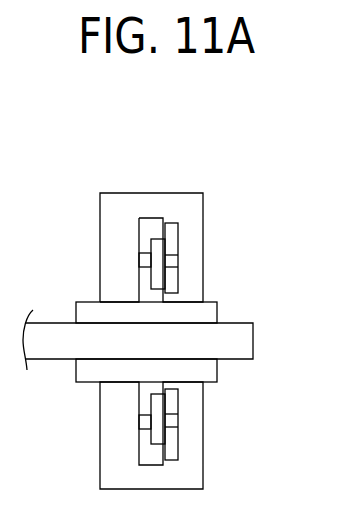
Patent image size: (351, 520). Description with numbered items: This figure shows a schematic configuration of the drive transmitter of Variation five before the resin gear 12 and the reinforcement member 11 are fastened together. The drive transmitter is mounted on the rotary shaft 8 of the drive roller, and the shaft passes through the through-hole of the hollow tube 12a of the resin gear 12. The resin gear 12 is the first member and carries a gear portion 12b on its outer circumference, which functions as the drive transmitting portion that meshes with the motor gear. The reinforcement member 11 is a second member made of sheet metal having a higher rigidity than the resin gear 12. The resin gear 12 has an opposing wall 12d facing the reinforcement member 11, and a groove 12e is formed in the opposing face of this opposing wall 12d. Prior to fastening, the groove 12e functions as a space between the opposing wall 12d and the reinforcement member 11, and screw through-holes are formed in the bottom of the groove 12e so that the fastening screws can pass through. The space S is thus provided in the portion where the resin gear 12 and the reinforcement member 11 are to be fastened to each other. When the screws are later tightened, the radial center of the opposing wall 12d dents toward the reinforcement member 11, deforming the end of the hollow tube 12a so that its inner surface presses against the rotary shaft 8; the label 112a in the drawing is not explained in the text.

The rotary shaft 8 is at (244, 322).
The reinforcement member 11 is at (183, 435).
The resin gear 12 is at (136, 431).
The hollow tube 12a is at (218, 375).
The gear portion 12b is at (148, 193).
The opposing wall 12d is at (138, 237).
The groove 12e is at (166, 245).
The through hole 112a is at (103, 323).
The space S is at (158, 274).